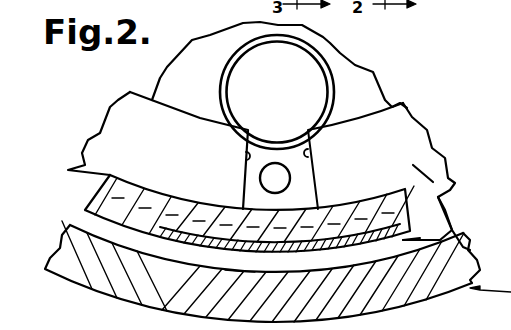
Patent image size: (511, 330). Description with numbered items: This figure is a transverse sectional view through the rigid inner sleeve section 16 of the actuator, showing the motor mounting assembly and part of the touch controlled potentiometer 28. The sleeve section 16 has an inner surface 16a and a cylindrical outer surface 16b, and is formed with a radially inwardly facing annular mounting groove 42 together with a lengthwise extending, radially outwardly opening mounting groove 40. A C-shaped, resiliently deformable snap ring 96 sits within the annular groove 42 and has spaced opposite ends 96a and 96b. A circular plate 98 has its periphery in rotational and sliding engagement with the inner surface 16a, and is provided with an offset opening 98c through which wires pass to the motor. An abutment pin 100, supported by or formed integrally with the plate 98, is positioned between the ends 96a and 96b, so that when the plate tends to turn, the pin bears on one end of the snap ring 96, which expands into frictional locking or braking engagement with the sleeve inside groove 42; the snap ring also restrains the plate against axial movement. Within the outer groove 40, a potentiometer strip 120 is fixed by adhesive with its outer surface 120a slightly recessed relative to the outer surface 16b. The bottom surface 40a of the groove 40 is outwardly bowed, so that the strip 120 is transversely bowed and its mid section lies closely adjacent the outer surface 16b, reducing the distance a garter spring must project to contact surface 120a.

The circular plate 98 is at (208, 76).
The offset opening 98c is at (313, 61).
The annular mounting groove 42 is at (102, 133).
The snap ring 96 is at (181, 150).
The snap ring end 96a is at (245, 156).
The snap ring end 96b is at (308, 150).
The abutment pin 100 is at (290, 180).
The mounting groove 40 is at (413, 184).
The groove bottom surface 40a is at (203, 240).
The potentiometer strip 120 is at (175, 233).
The potentiometer strip outer surface 120a is at (240, 266).
The rigid inner sleeve section 16 is at (450, 200).
The inner surface 16a is at (432, 143).
The cylindrical outer surface 16b is at (450, 228).
The potentiometer 28 is at (500, 63).